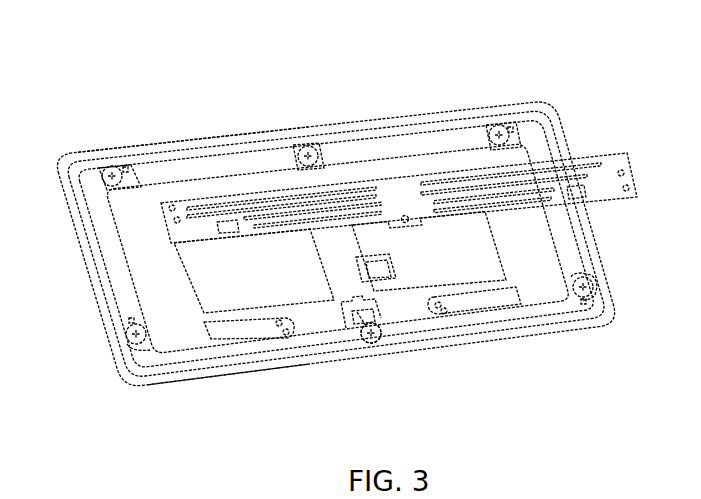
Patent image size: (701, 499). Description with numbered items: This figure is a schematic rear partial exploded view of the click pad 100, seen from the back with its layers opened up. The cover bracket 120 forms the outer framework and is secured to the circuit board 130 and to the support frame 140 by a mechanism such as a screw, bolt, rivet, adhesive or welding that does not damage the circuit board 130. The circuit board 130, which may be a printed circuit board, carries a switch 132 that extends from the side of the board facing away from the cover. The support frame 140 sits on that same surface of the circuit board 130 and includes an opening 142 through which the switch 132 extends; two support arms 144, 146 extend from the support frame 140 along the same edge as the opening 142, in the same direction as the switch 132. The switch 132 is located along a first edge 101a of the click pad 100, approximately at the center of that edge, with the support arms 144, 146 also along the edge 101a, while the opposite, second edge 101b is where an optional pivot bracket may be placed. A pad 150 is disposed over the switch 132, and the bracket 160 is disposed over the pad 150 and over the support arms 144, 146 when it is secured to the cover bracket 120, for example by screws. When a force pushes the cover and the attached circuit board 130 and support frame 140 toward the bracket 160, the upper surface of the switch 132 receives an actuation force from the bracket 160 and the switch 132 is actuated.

The click pad 100 is at (412, 60).
The edge 101a is at (189, 387).
The edge 101b is at (241, 133).
The cover bracket 120 is at (614, 301).
The circuit board 130 is at (268, 280).
The switch 132 is at (352, 320).
The support frame 140 is at (147, 298).
The opening 142 is at (384, 324).
The support arm 144 is at (484, 301).
The support arm 146 is at (233, 327).
The pad 150 is at (390, 262).
The bracket 160 is at (610, 154).